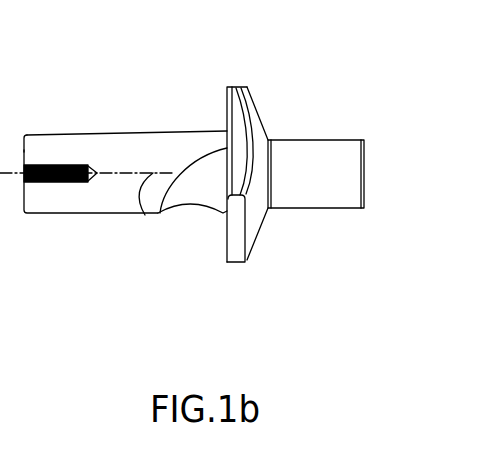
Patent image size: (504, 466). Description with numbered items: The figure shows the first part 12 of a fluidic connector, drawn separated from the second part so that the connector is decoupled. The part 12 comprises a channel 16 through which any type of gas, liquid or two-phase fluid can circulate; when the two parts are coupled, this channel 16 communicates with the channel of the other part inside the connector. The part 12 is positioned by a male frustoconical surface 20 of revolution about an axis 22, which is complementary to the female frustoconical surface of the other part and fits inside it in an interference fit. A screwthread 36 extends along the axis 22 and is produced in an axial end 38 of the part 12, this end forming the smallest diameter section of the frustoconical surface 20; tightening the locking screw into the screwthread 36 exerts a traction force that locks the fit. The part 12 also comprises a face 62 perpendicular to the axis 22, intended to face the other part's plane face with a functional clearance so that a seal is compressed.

The first part 12 is at (123, 93).
The channel 16 is at (364, 176).
The male frustoconical surface 20 is at (82, 215).
The axis 22 is at (145, 215).
The screwthread 36 is at (60, 167).
The axial end 38 is at (24, 150).
The face 62 is at (227, 235).